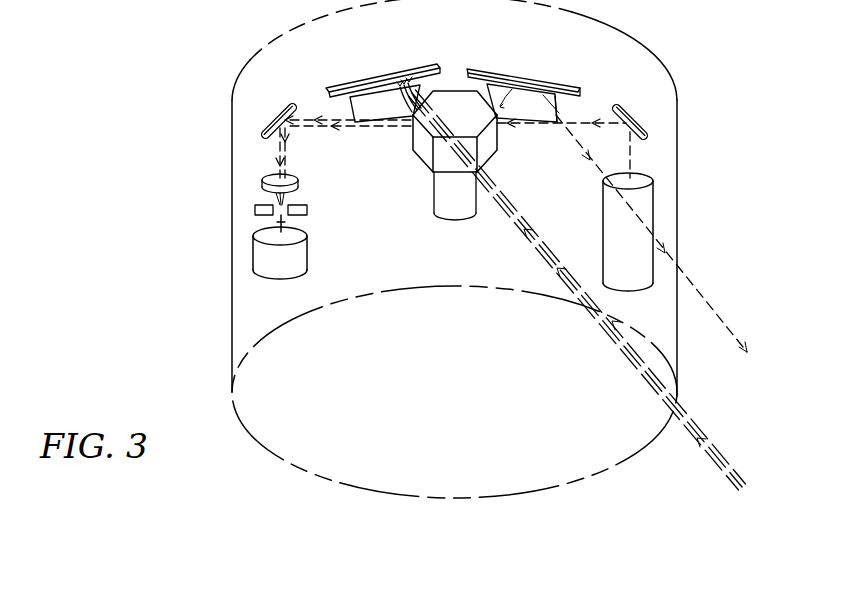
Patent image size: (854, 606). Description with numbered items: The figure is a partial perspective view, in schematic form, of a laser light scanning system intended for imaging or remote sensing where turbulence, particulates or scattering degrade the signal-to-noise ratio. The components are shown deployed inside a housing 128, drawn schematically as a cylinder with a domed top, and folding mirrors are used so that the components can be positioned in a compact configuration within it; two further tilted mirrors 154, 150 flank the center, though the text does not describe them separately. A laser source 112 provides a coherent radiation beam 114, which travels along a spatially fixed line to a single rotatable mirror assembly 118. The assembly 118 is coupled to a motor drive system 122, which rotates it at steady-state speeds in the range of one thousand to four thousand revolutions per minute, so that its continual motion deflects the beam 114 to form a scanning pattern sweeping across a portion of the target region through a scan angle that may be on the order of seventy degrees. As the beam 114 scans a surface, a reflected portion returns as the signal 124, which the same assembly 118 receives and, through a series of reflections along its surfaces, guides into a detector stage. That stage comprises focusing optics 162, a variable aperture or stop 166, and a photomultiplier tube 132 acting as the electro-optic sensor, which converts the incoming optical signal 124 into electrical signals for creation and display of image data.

The housing 128 is at (613, 27).
The tiltable mirror 154 is at (385, 75).
The tiltable mirror 150 is at (524, 87).
The rotatable mirror assembly 118 is at (455, 91).
The motor drive system 122 is at (434, 197).
The signal 124 is at (722, 463).
The coherent radiation beam 114 is at (703, 293).
The laser source 112 is at (653, 207).
The focusing optics 162 is at (264, 178).
The variable aperture 166 is at (255, 206).
The photomultiplier tube 132 is at (255, 252).